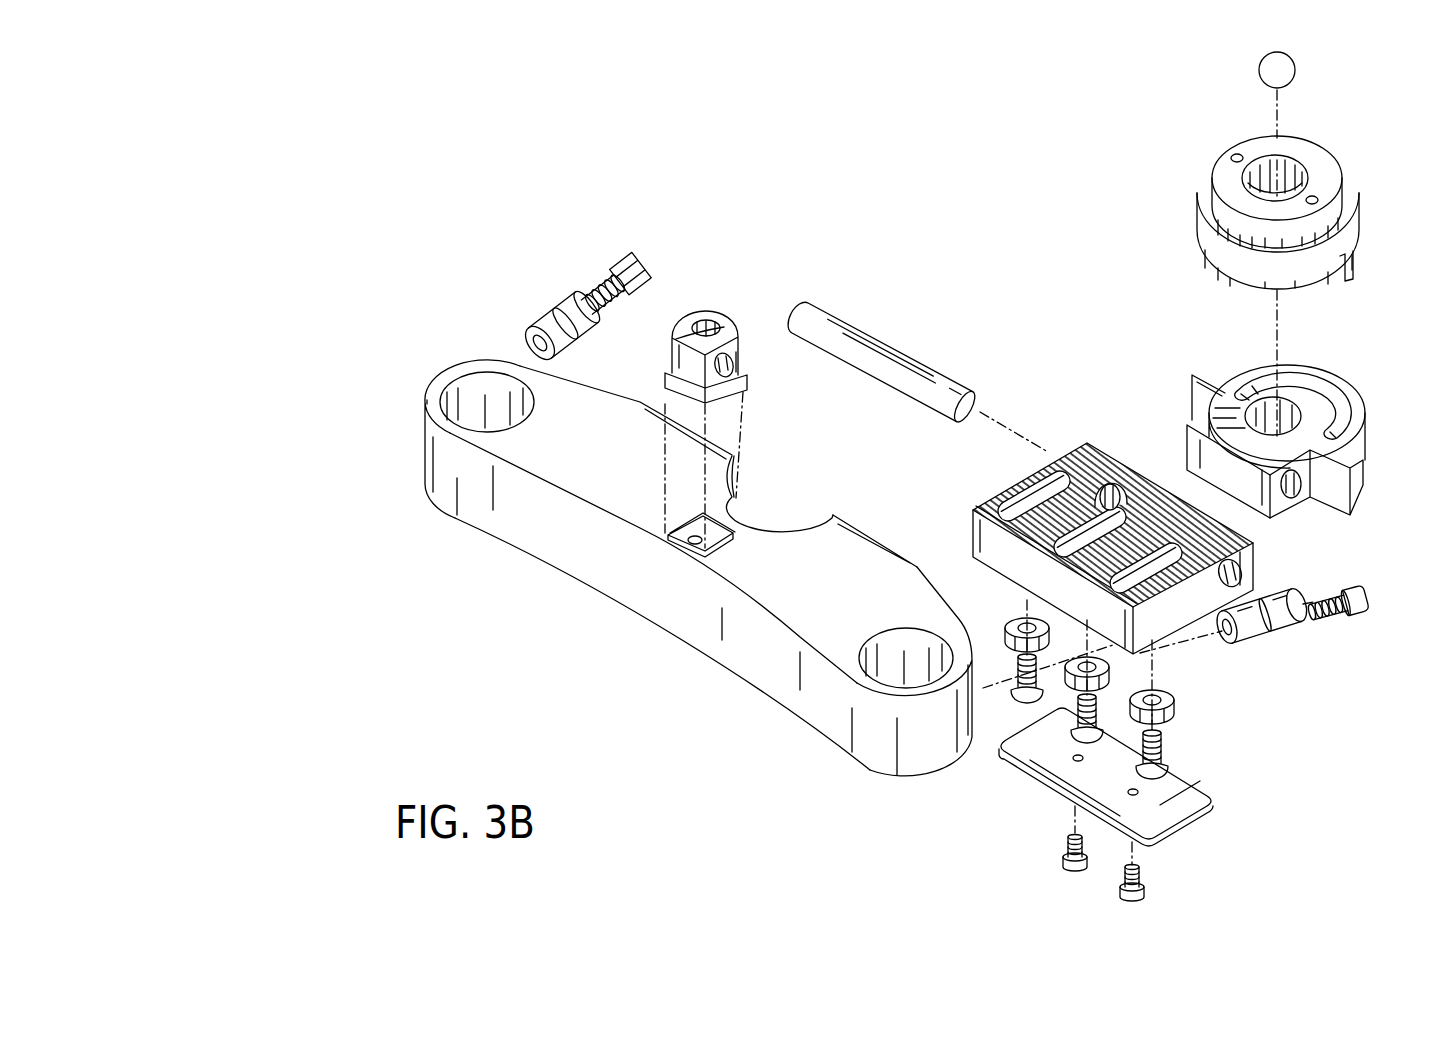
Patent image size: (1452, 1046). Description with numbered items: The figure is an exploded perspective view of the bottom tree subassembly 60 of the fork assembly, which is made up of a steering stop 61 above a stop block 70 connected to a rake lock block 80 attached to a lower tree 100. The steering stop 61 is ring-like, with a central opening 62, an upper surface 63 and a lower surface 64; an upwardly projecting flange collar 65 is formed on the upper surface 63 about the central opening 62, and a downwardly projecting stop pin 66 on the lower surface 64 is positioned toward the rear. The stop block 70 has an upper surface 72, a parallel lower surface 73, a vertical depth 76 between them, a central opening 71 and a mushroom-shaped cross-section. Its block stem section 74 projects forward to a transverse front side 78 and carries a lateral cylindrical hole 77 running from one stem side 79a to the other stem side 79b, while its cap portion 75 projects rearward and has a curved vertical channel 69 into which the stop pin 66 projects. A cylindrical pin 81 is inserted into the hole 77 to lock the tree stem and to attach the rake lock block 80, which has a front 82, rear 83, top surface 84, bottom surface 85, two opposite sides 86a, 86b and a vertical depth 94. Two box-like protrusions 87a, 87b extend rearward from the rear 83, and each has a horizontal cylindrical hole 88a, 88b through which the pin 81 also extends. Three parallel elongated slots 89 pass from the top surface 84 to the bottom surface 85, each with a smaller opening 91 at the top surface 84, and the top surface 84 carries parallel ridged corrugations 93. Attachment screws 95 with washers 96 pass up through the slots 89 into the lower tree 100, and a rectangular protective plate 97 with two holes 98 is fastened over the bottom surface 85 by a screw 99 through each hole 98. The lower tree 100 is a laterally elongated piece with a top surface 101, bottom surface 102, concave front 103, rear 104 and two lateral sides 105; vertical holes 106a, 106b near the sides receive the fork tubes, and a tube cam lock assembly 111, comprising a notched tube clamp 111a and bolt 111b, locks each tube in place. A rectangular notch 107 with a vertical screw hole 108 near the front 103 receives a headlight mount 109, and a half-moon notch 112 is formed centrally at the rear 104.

The bottom tree subassembly 60 is at (286, 536).
The steering stop 61 is at (1345, 172).
The central opening 62 is at (1285, 152).
The upper surface 63 is at (1350, 206).
The lower surface 64 is at (1213, 268).
The flange collar 65 is at (1320, 154).
The stop pin 66 is at (1358, 268).
The curved vertical channel 69 is at (1340, 418).
The stop block 70 is at (1366, 466).
The central opening 71 is at (1290, 401).
The upper surface 72 is at (1348, 390).
The lower surface 73 is at (1366, 492).
The block stem section 74 is at (1195, 407).
The cap portion 75 is at (1295, 363).
The vertical depth 76 is at (1268, 496).
The lateral cylindrical hole 77 is at (1293, 497).
The transverse front side 78 is at (1190, 438).
The stem side 79a is at (1292, 512).
The stem side 79b is at (1190, 461).
The rake lock block 80 is at (1256, 583).
The cylindrical pin 81 is at (801, 311).
The front 82 is at (977, 524).
The rear 83 is at (1146, 536).
The top surface 84 is at (990, 505).
The bottom surface 85 is at (1180, 640).
The side 86a is at (1162, 632).
The side 86b is at (1005, 503).
The box-like protrusion 87a is at (1243, 534).
The box-like protrusion 87b is at (1065, 455).
The horizontal cylindrical hole 88a is at (1220, 580).
The horizontal cylindrical hole 88b is at (1120, 495).
The elongated slots 89 is at (1018, 525).
The slot opening 91 is at (992, 526).
The ridged corrugations 93 is at (1190, 540).
The vertical depth 94 is at (974, 540).
The attachment screws 95 is at (1072, 738).
The washers 96 is at (1005, 630).
The protective plate 97 is at (1205, 802).
The holes 98 is at (1140, 797).
The screw 99 is at (1072, 870).
The lower tree 100 is at (880, 776).
The top surface 101 is at (430, 392).
The bottom surface 102 is at (480, 521).
The front 103 is at (578, 560).
The rear 104 is at (840, 514).
The lateral sides 105 is at (437, 383).
The vertical hole 106a is at (880, 646).
The vertical hole 106b is at (475, 383).
The rectangular notch 107 is at (718, 534).
The vertical screw hole 108 is at (694, 547).
The headlight mount 109 is at (703, 318).
The tube cam lock assembly 111 is at (571, 262).
The notched tube clamp 111a is at (1256, 640).
The bolt 111b is at (1345, 614).
The half-moon notch 112 is at (747, 510).